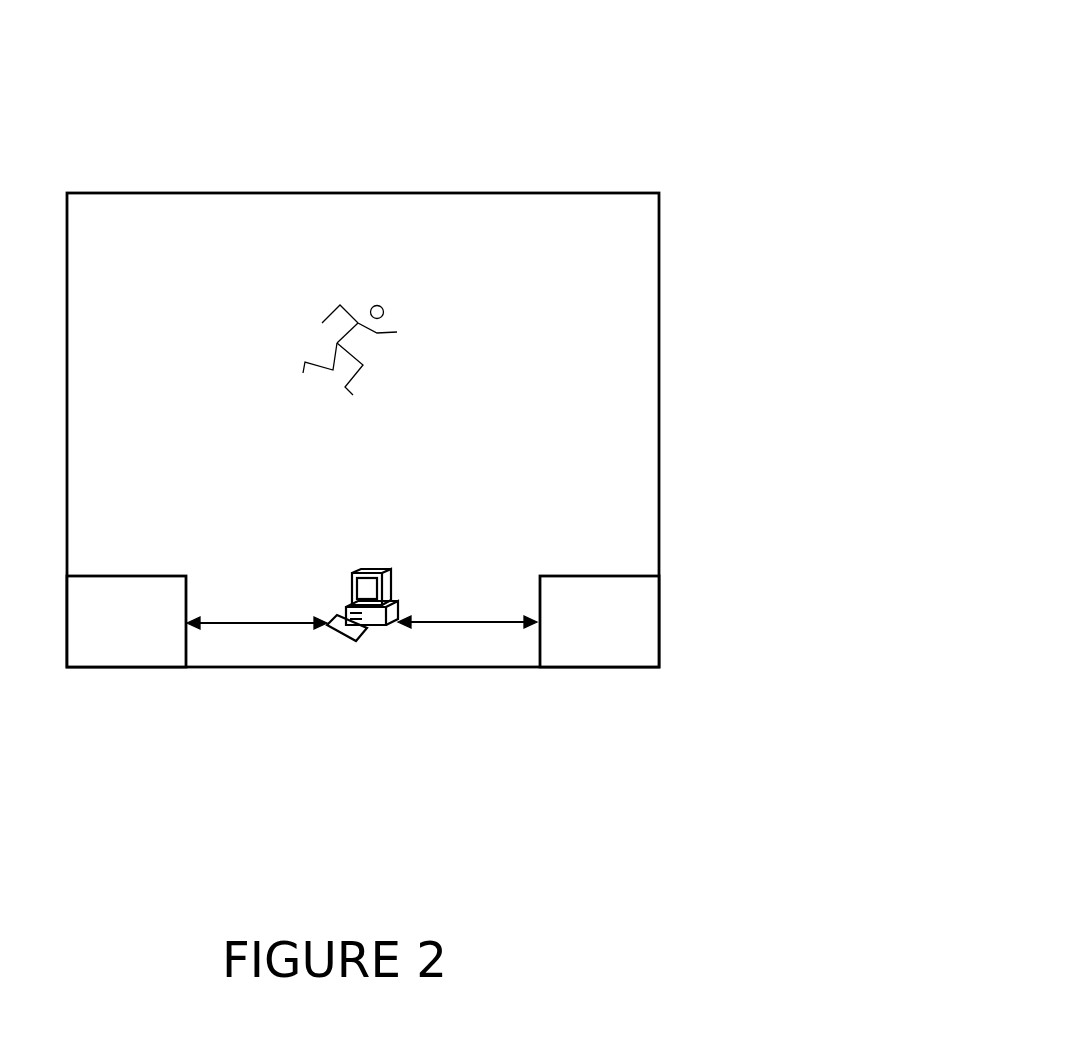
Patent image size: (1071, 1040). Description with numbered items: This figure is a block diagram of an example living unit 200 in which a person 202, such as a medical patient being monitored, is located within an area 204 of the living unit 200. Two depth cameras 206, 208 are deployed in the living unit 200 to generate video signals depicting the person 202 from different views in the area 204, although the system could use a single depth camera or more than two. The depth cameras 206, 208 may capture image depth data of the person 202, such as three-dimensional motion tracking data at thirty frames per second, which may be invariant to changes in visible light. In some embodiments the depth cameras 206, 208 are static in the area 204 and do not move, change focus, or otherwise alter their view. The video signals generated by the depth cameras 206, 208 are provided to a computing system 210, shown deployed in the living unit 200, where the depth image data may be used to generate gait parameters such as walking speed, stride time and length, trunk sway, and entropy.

The living unit 200 is at (690, 122).
The person 202 is at (363, 310).
The area 204 is at (660, 432).
The depth camera 206 is at (126, 667).
The depth camera 208 is at (598, 667).
The computing system 210 is at (370, 643).